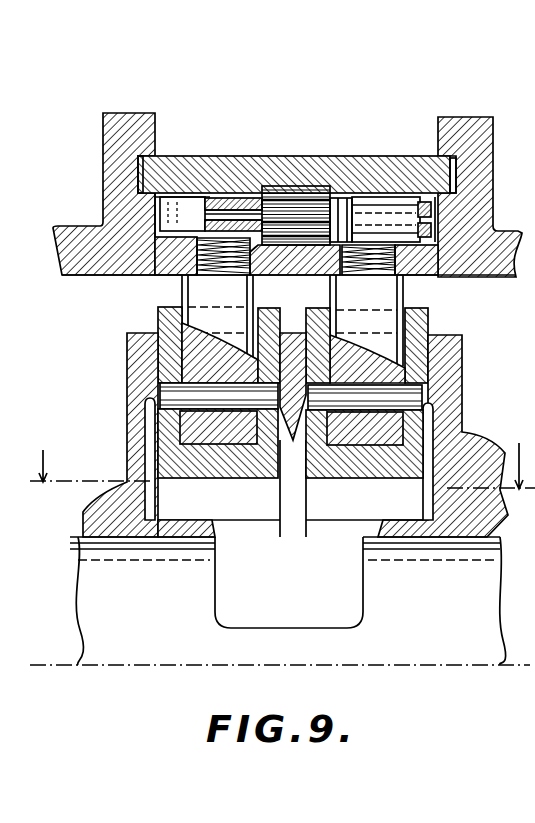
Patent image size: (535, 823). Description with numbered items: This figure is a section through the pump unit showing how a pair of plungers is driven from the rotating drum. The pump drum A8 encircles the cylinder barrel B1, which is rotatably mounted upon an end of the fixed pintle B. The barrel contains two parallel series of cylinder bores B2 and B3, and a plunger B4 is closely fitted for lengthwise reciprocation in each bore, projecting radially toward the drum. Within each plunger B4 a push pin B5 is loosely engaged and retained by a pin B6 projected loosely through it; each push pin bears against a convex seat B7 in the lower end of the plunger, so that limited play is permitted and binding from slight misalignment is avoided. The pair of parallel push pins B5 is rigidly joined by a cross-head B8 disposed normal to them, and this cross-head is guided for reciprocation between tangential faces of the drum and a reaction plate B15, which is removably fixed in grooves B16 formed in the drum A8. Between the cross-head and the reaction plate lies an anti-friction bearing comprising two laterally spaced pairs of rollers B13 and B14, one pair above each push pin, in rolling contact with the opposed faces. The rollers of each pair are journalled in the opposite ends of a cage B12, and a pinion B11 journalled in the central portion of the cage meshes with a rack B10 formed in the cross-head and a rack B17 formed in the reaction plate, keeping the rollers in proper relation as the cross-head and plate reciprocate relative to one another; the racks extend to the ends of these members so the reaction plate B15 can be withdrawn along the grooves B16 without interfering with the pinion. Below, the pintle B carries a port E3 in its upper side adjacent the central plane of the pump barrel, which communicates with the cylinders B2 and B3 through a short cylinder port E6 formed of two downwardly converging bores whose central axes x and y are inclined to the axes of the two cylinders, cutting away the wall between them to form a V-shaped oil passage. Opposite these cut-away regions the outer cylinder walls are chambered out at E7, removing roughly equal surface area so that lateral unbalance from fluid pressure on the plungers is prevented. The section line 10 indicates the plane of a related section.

The pump drum A8 is at (80, 230).
The reaction plate B15 is at (270, 165).
The grooves B16 is at (138, 168).
The cross-head B8 is at (165, 253).
The rack B10 is at (373, 270).
The rollers B13 is at (183, 200).
The cage B12 is at (245, 198).
The pinion B11 is at (295, 198).
The rack B17 is at (342, 197).
The rollers B14 is at (373, 197).
The push pin B5 is at (182, 288).
The plunger B4 is at (167, 313).
The cylinder barrel B1 is at (135, 360).
The chambered-out portion E7 is at (148, 433).
The pin B6 is at (168, 395).
The convex seat B7 is at (197, 443).
The cylinder port E6 is at (325, 530).
The cylinder bore B3 is at (197, 508).
The cylinder bore B2 is at (365, 540).
The pintle B is at (80, 597).
The port E3 is at (225, 607).
The axis of cylinder port bore y is at (223, 347).
The axis of cylinder port bore x is at (362, 347).
The section line 10 is at (270, 463).